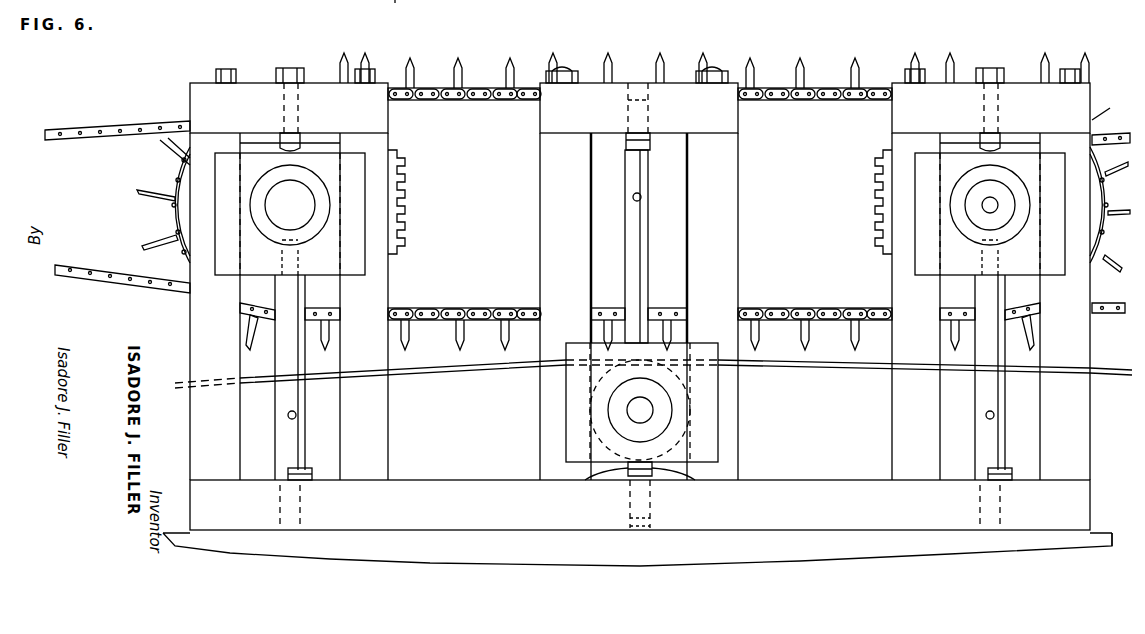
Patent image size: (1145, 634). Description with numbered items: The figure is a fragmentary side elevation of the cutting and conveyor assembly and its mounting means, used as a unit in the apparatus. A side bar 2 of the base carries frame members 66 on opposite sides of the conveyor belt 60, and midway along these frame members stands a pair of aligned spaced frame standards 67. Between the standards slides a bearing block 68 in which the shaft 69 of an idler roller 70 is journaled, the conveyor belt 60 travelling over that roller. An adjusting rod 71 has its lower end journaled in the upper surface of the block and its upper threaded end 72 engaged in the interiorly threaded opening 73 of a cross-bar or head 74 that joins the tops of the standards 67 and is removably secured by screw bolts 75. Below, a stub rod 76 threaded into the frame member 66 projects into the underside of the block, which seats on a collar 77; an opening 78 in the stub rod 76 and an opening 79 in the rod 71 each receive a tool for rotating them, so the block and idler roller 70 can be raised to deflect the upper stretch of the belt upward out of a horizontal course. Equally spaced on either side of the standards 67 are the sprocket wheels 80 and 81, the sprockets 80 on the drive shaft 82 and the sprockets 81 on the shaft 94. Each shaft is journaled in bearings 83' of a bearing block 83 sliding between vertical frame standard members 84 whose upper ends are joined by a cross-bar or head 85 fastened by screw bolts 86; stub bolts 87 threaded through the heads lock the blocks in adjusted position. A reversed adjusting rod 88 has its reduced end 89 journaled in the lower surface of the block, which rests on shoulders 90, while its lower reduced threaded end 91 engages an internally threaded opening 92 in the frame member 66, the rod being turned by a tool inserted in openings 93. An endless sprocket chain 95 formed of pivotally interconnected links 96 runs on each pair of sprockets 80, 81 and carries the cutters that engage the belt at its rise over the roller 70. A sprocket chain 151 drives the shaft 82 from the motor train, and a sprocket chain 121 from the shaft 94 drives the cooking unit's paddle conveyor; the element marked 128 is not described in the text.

The side bar 2 is at (1112, 512).
The conveyor belt 60 is at (178, 386).
The frame member 66 is at (466, 490).
The frame standard 67 is at (738, 212).
The slidable bearing block 68 is at (663, 390).
The shaft 69 is at (645, 410).
The idler roller 70 is at (566, 430).
The adjusting rod 71 is at (648, 252).
The upper threaded end 72 is at (650, 145).
The interiorly threaded opening 73 is at (636, 83).
The cross-bar or head 74 is at (572, 122).
The screw bolt 75 is at (572, 71).
The stub rod 76 is at (628, 474).
The collar 77 is at (672, 480).
The opening 78 is at (599, 484).
The opening 79 is at (641, 197).
The sprocket wheel 80 is at (405, 190).
The sprocket wheel 81 is at (875, 205).
The shaft 82 is at (270, 215).
The bearing block 83 is at (683, 225).
The bearing 83' is at (630, 240).
The vertical frame standard member 84 is at (190, 442).
The cross-bar or head 85 is at (200, 108).
The screw bolt 86 is at (226, 69).
The stub bolt 87 is at (288, 68).
The adjusting rod 88 is at (298, 400).
The reduced end 89 is at (312, 260).
The shoulder 90 is at (640, 317).
The lower reduced threaded end 91 is at (312, 476).
The internally threaded opening 92 is at (288, 474).
The opening 93 is at (296, 415).
The shaft 94 is at (991, 205).
The endless sprocket chain 95 is at (483, 76).
The link 96 is at (480, 100).
The sprocket chain 121 is at (1128, 125).
The pin 128 is at (386, 7).
The sprocket chain 151 is at (115, 275).